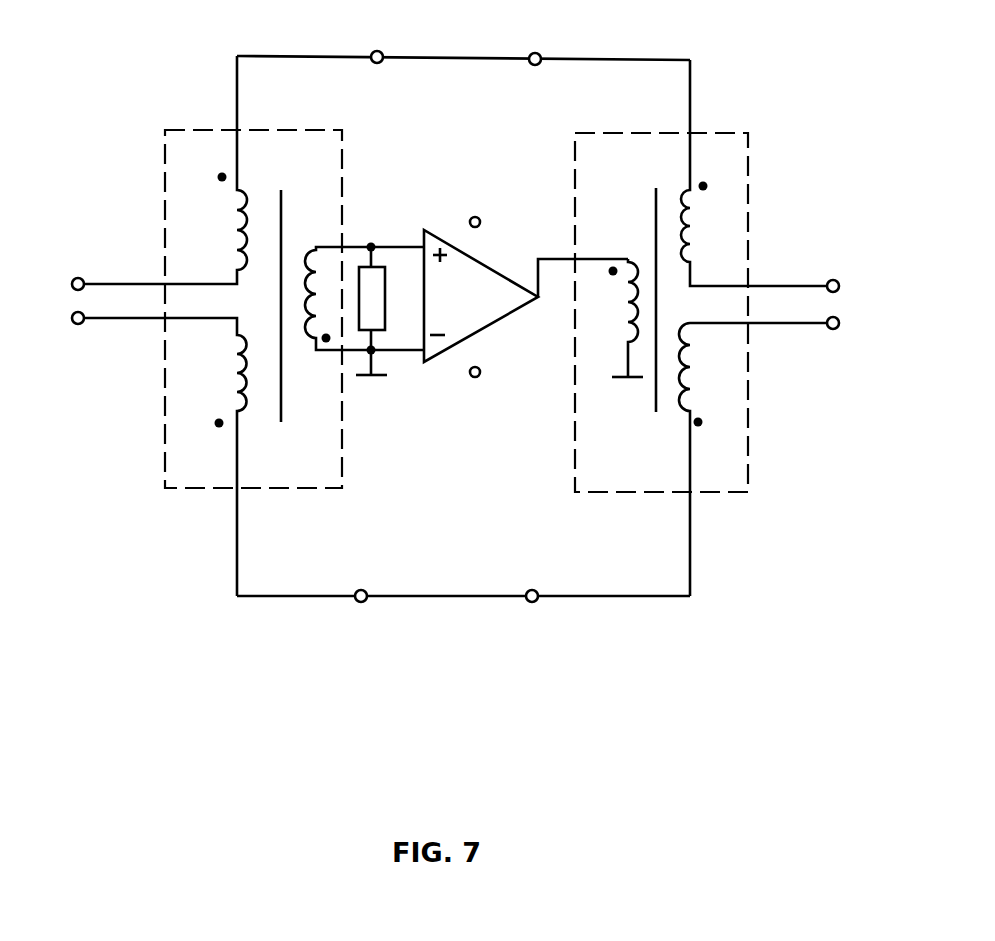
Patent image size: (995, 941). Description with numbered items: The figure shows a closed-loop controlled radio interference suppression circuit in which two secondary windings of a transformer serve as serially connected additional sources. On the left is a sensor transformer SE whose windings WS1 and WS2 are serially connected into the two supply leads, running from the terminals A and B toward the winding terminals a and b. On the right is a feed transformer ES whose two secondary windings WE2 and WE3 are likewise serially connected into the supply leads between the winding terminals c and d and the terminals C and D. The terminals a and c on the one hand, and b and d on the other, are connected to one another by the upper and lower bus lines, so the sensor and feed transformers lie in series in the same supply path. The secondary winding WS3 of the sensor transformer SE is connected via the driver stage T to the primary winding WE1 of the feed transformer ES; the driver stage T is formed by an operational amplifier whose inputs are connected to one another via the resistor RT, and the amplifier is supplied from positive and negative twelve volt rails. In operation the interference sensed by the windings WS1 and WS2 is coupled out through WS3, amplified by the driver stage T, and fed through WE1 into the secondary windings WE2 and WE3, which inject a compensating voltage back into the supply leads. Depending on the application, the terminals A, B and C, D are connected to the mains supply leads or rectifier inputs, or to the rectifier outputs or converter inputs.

The first primary winding of sensor transformer WS1 is at (166, 170).
The second primary winding of sensor transformer WS2 is at (166, 457).
The secondary winding of sensor transformer WS3 is at (322, 240).
The primary winding of feed transformer WE1 is at (611, 302).
The first secondary winding of feed transformer WE2 is at (705, 223).
The second secondary winding of feed transformer WE3 is at (700, 377).
The resistor RT is at (374, 293).
The driver stage T is at (434, 370).
The sensor transformer SE is at (190, 503).
The feed transformer ES is at (722, 506).
The terminal A is at (77, 264).
The terminal B is at (77, 339).
The terminal C is at (834, 269).
The terminal D is at (834, 344).
The winding terminal a is at (375, 38).
The winding terminal b is at (365, 614).
The winding terminal c is at (533, 41).
The winding terminal d is at (528, 614).